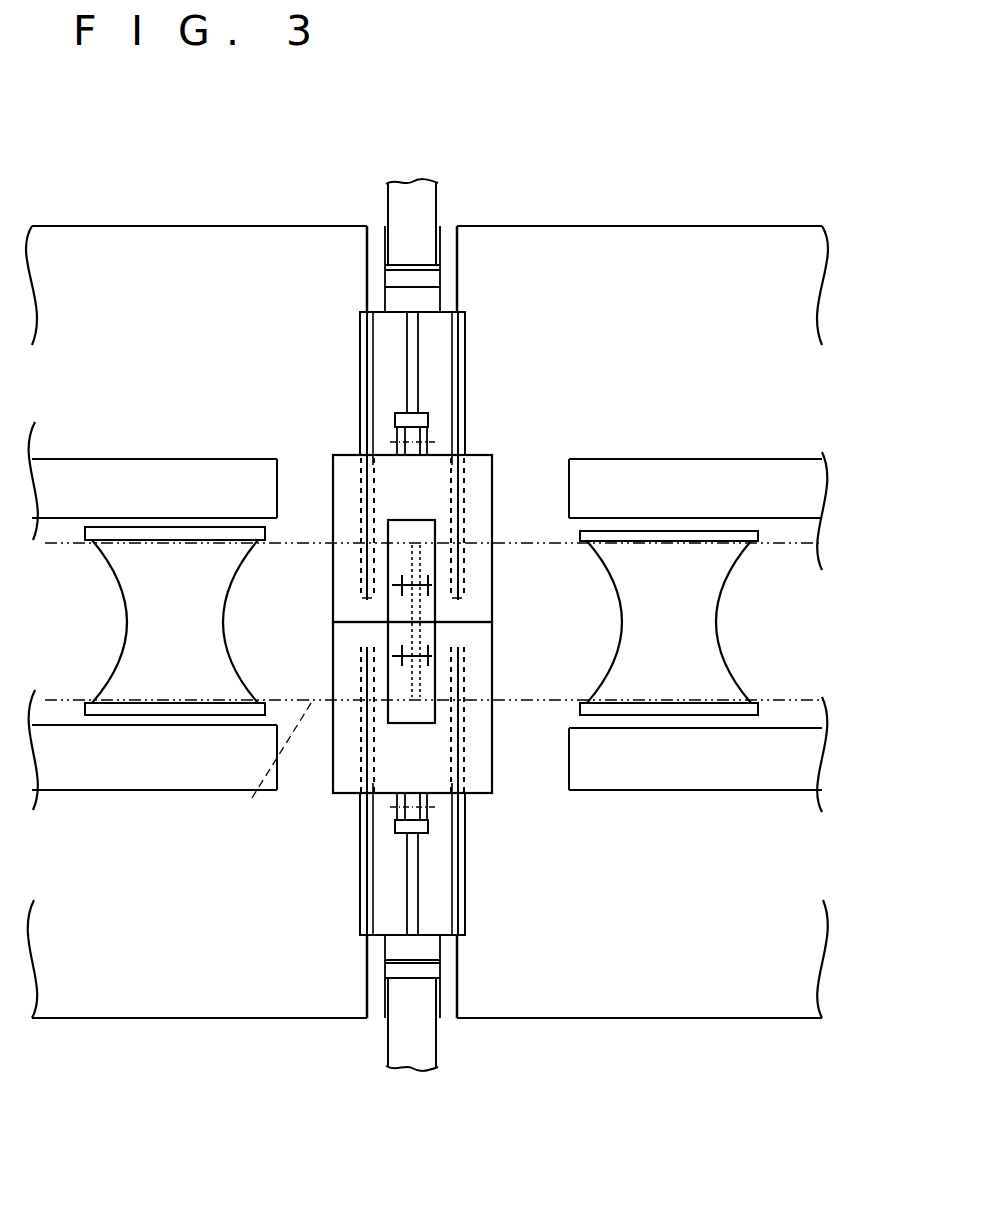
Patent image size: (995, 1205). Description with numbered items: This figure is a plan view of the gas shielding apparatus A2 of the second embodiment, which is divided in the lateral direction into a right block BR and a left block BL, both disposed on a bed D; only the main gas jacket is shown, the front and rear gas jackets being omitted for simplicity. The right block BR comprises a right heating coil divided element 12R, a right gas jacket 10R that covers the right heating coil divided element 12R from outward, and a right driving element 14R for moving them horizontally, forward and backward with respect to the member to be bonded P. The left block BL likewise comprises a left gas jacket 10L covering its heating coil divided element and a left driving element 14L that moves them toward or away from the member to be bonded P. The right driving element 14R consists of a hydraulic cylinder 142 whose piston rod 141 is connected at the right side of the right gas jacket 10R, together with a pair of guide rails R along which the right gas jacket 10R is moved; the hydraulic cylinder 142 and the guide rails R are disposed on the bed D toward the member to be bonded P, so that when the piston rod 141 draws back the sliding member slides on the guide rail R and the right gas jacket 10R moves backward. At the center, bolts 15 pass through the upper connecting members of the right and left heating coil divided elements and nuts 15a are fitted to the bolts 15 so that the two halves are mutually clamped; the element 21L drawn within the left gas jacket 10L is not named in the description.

The gas shielding apparatus A2 is at (296, 256).
The bed D is at (580, 243).
The hydraulic cylinder 142 is at (388, 240).
The piston rod 141 is at (418, 340).
The left driving element 14L is at (451, 211).
The right driving element 14R is at (361, 967).
The guide rail R is at (360, 347).
The left block BL is at (327, 384).
The right block BR is at (327, 806).
The left gas jacket 10L is at (496, 521).
The right gas jacket 10R is at (500, 745).
The left guide member 21L is at (442, 526).
The right heating coil divided element 12R is at (439, 731).
The bolt 15 is at (436, 585).
The nut 15a is at (412, 620).
The member to be bonded P is at (269, 764).